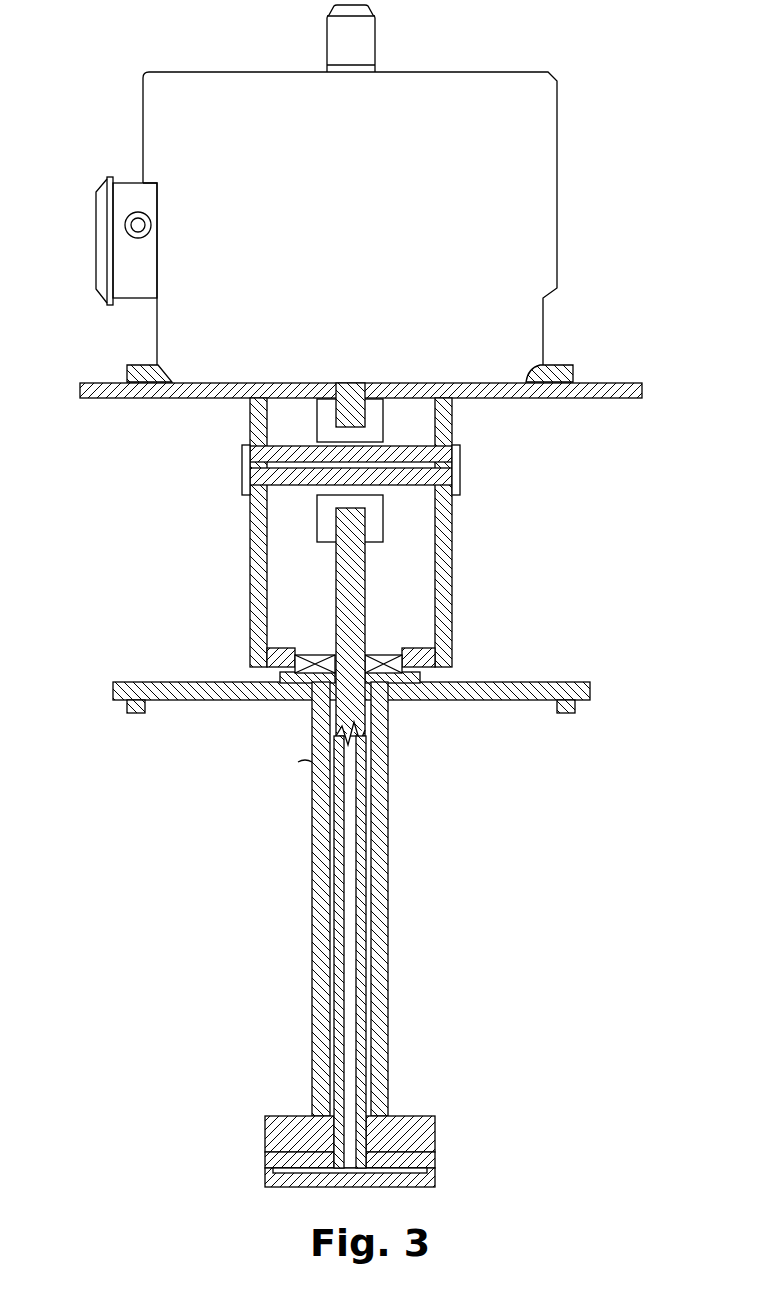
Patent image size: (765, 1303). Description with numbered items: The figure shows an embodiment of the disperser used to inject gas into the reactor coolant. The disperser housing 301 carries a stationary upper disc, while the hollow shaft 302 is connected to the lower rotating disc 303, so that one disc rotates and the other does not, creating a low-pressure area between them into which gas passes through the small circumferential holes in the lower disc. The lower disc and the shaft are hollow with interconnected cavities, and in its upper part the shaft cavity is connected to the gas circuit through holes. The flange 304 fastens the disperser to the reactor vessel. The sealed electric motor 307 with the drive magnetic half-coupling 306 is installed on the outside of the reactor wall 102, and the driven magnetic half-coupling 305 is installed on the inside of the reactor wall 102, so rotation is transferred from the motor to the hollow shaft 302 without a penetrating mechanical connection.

The electric motor 307 is at (523, 183).
The reactor wall 102 is at (617, 383).
The drive magnetic half-coupling 306 is at (383, 400).
The driven magnetic half-coupling 305 is at (383, 533).
The flange 304 is at (540, 683).
The hollow shaft 302 is at (367, 920).
The disperser housing 301 is at (390, 1023).
The lower rotating disc 303 is at (432, 1180).